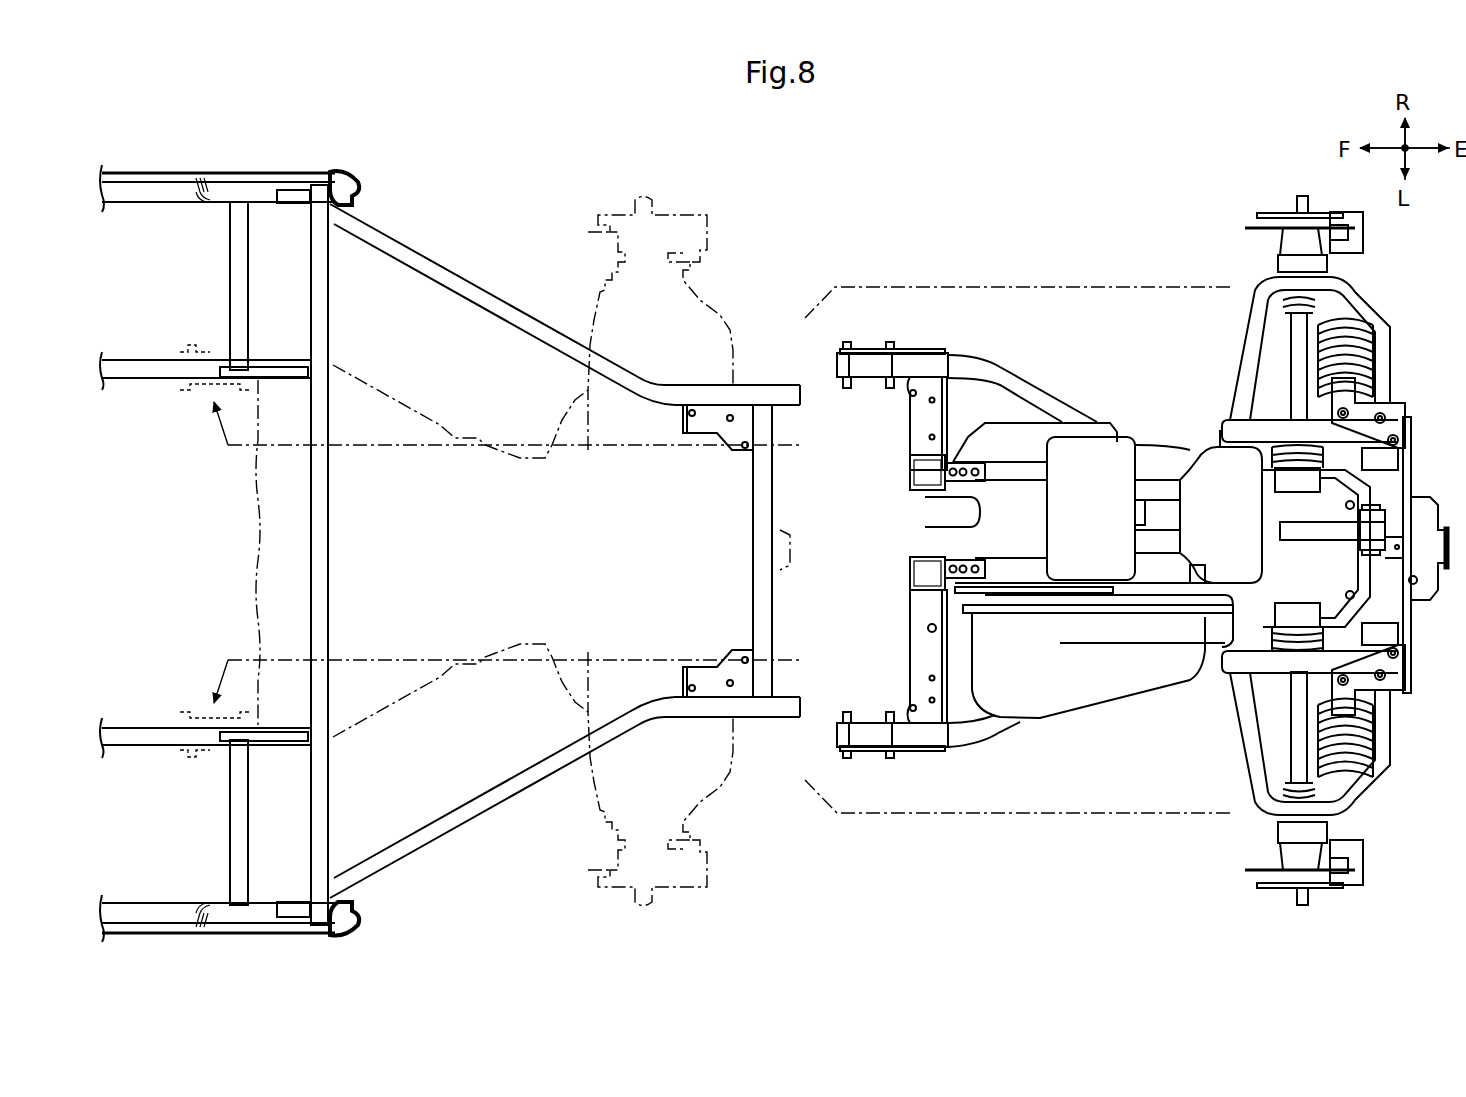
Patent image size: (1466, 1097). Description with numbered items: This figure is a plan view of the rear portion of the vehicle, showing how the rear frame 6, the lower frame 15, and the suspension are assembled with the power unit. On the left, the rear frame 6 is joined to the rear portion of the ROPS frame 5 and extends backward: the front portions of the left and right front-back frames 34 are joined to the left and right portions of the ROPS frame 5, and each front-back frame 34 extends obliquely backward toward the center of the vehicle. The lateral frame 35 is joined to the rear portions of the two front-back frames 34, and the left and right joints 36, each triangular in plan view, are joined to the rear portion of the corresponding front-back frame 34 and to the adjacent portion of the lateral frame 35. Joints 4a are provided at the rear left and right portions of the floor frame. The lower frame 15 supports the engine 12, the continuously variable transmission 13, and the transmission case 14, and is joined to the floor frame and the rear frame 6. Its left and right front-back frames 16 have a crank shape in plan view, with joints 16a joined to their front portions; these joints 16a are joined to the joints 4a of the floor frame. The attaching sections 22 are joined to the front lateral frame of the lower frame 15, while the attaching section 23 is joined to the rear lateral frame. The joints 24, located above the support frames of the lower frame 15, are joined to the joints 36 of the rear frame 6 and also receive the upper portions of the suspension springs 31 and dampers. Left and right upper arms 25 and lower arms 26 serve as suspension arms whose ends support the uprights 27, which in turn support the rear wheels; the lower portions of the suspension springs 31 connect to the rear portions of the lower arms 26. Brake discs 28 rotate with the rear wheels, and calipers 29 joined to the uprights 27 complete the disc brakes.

The ROPS frame 5 is at (172, 165).
The joints 4a is at (205, 362).
The rear frame 6 is at (565, 548).
The front-back frames 34 is at (417, 252).
The lateral frame 35 is at (760, 583).
The joints 36 is at (718, 432).
The lower frame 15 is at (926, 548).
The front-back frames 16 is at (993, 370).
The joints 16a is at (868, 350).
The attaching sections 22 is at (915, 529).
The engine 12 is at (1013, 432).
The continuously variable transmission 13 is at (1093, 697).
The transmission case 14 is at (1302, 568).
The attaching section 23 is at (1393, 520).
The joints 24 is at (1393, 416).
The upper arms 25 is at (1248, 362).
The lower arms 26 is at (1275, 376).
The uprights 27 is at (1280, 258).
The brake discs 28 is at (1252, 226).
The calipers 29 is at (1365, 228).
The suspension springs 31 is at (1355, 328).